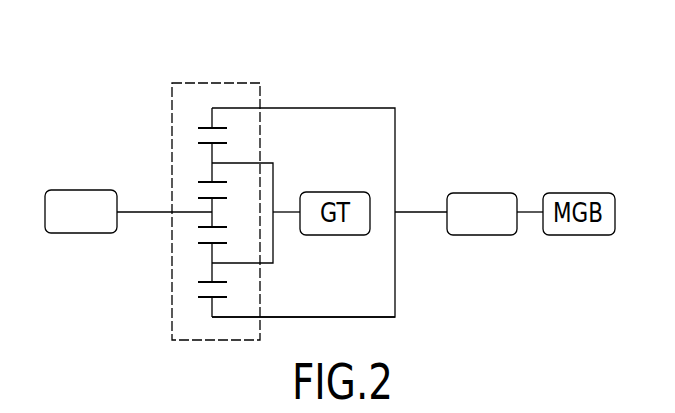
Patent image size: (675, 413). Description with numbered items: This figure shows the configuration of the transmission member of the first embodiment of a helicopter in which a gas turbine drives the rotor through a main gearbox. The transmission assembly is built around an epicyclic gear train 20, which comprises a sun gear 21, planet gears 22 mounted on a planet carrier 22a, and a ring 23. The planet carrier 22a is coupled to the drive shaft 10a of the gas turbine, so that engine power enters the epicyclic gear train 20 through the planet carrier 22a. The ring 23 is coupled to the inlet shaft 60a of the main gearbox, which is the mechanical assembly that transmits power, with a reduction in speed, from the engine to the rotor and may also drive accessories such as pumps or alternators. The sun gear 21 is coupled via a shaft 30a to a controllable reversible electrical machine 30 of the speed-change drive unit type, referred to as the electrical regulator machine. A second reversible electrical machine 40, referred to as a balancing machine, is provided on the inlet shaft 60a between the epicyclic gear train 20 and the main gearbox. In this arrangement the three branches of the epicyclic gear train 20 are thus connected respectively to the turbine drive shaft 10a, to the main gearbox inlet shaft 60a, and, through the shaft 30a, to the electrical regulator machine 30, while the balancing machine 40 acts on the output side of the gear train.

The epicyclic gear train 20 is at (218, 83).
The sun gear 21 is at (213, 222).
The planet gears 22 is at (211, 172).
The planet carrier 22a is at (273, 172).
The ring 23 is at (214, 318).
The controllable reversible electrical machine 30 is at (91, 225).
The shaft 30a is at (145, 213).
The second reversible electrical machine 40 is at (491, 225).
The inlet shaft 60a is at (422, 212).
The drive shaft 10a is at (285, 213).